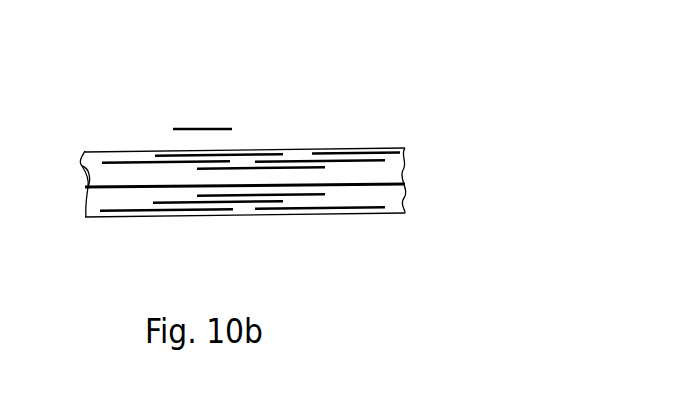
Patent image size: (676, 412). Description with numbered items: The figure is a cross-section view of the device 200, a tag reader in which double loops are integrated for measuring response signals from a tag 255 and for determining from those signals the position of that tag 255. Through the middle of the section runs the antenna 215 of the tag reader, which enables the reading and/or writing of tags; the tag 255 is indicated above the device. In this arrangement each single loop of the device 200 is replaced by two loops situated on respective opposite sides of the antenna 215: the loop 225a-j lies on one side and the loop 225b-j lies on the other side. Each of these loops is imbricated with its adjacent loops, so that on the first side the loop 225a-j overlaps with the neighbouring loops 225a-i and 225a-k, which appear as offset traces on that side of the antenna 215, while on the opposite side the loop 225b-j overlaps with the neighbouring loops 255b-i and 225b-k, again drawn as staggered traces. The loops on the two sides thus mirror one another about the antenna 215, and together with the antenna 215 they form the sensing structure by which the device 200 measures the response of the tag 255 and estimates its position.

The device 200 is at (107, 217).
The antenna 215 is at (83, 165).
The tag 255 is at (192, 128).
The loop 255b-i is at (137, 160).
The loop 225b-j is at (233, 153).
The loop 225b-k is at (298, 170).
The loop 225a-i is at (153, 212).
The loop 225a-j is at (240, 204).
The loop 225a-k is at (313, 196).